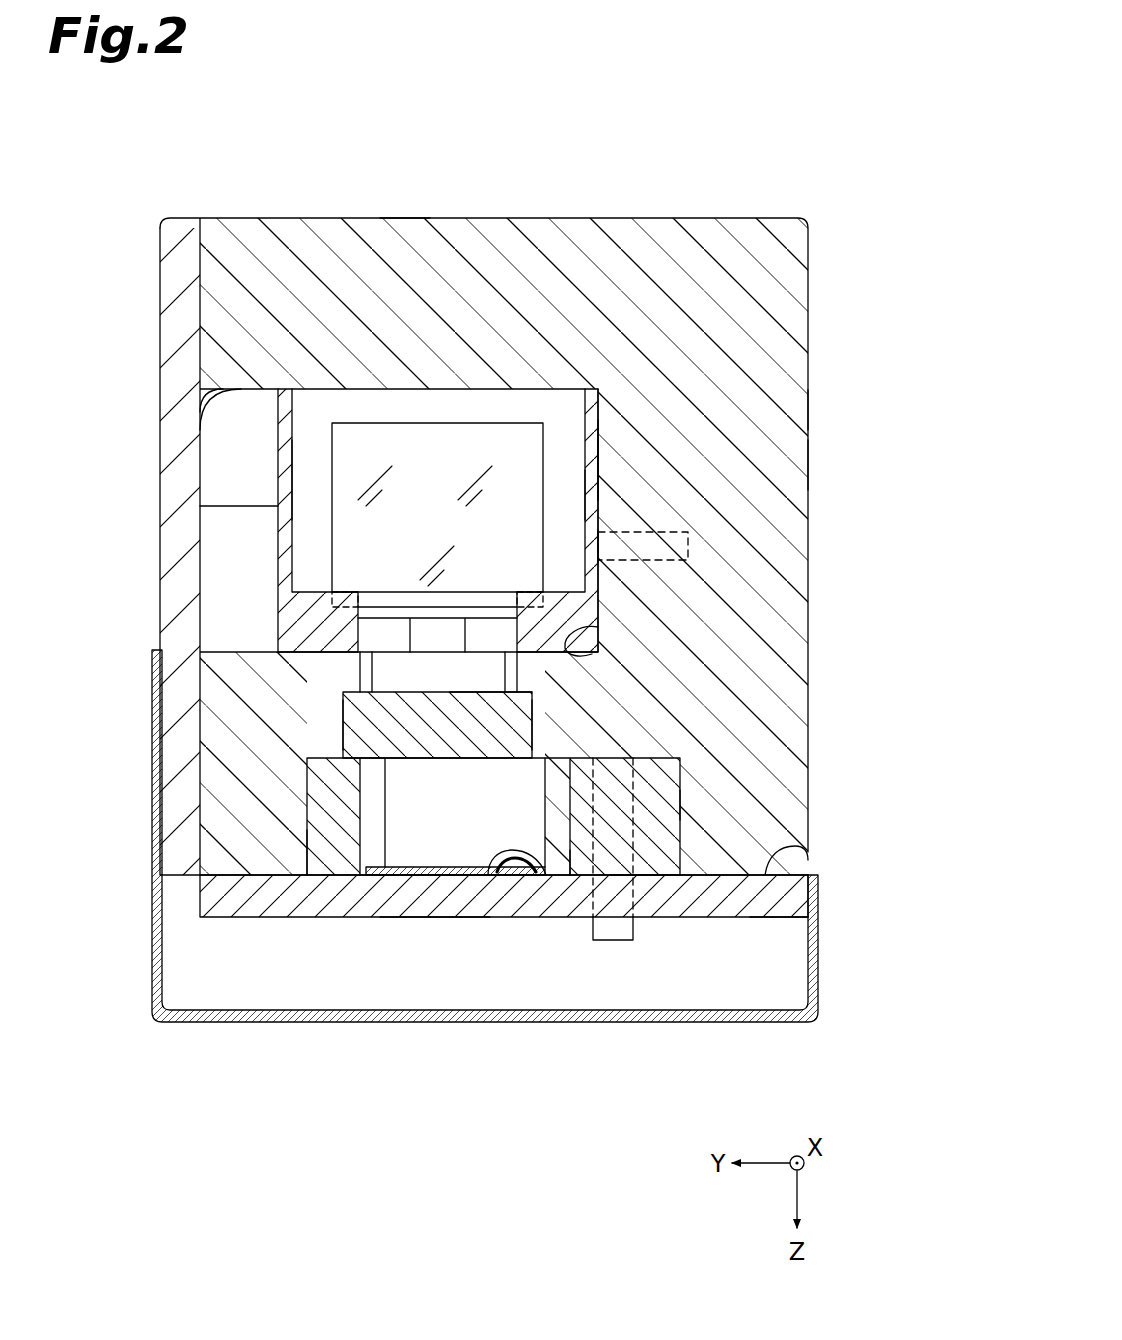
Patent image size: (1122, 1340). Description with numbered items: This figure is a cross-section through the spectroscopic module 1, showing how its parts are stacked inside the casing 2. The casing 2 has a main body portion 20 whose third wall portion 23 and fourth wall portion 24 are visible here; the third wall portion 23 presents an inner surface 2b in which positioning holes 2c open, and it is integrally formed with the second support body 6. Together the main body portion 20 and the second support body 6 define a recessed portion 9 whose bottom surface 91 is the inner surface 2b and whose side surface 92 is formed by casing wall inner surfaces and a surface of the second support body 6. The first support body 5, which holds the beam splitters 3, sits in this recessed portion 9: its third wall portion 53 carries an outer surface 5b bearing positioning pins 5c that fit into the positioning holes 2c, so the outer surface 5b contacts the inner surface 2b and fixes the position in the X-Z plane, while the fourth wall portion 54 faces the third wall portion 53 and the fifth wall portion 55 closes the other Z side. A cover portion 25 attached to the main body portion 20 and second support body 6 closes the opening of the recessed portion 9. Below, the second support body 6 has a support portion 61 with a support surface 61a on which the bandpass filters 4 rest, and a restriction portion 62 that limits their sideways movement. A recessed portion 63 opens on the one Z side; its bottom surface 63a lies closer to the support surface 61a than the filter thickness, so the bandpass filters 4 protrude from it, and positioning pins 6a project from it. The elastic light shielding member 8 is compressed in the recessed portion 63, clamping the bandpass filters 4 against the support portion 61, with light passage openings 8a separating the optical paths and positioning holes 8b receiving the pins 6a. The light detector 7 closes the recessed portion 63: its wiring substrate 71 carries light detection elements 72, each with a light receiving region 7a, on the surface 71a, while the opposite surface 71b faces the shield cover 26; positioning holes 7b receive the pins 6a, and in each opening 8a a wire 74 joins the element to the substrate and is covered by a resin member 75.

The spectroscopic module 1 is at (690, 176).
The casing 2 is at (278, 216).
The inner surface 2b is at (586, 452).
The positioning holes 2c is at (664, 559).
The beam splitters 3 is at (345, 462).
The bandpass filters 4 is at (343, 712).
The first support body 5 is at (276, 548).
The outer surface 5b is at (600, 466).
The positioning pins 5c is at (664, 531).
The second support body 6 is at (236, 646).
The positioning pins 6a is at (612, 941).
The light detector 7 is at (365, 919).
The light receiving regions 7a is at (425, 867).
The positioning holes 7b is at (622, 876).
The light shielding member 8 is at (320, 796).
The light passage openings 8a is at (558, 852).
The positioning holes 8b is at (660, 876).
The recessed portion 9 is at (215, 402).
The main body portion 20 is at (810, 408).
The third wall portion 23 is at (788, 462).
The fourth wall portion 24 is at (403, 240).
The cover portion 25 is at (165, 520).
The shield cover 26 is at (512, 1023).
The third wall portion 53 is at (600, 492).
The fourth wall portion 54 is at (290, 478).
The fifth wall portion 55 is at (477, 400).
The support portion 61 is at (522, 700).
The support surface 61a is at (532, 745).
The restriction portion 62 is at (345, 742).
The recessed portion 63 is at (330, 877).
The bottom surface 63a is at (690, 800).
The wiring substrate 71 is at (460, 900).
The surface 71a is at (790, 852).
The surface 71b is at (775, 918).
The light detection elements 72 is at (405, 917).
The wire 74 is at (500, 852).
The resin member 75 is at (523, 853).
The bottom surface 91 is at (578, 640).
The side surface 92 is at (240, 420).